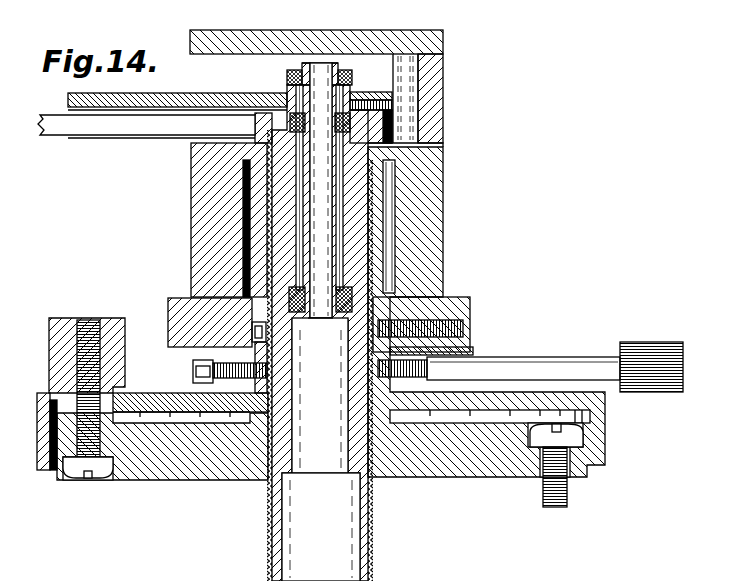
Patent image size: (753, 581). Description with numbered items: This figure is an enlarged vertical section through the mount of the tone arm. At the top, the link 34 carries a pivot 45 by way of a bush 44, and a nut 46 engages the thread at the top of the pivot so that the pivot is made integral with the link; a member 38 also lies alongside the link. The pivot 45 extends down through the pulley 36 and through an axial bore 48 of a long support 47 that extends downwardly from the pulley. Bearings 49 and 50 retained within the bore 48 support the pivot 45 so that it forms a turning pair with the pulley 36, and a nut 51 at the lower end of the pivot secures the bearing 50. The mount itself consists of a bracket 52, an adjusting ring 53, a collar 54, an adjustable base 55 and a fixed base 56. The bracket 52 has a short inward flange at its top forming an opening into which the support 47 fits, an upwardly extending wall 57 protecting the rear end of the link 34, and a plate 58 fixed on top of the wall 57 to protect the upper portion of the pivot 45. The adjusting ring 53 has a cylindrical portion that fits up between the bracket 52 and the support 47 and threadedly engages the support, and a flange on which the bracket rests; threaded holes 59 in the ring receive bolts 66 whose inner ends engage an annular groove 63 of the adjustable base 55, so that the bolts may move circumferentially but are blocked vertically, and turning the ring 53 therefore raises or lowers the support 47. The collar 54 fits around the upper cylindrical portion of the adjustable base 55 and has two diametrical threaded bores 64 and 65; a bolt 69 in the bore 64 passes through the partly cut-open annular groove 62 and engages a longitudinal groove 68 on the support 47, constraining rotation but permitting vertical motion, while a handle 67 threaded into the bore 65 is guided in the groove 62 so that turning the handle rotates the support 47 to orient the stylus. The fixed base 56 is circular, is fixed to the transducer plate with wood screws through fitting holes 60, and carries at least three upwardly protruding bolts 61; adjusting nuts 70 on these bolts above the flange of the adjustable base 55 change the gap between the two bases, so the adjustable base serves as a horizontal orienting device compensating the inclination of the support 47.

The link 34 is at (186, 93).
The pulley 36 is at (420, 146).
The lower plate 38 is at (124, 133).
The bush 44 is at (288, 90).
The pivot 45 is at (323, 320).
The nut 46 is at (352, 78).
The support 47 is at (366, 515).
The axial bore 48 is at (331, 416).
The bearing 49 is at (290, 128).
The bearing 50 is at (291, 296).
The nut 51 is at (297, 318).
The bracket 52 is at (206, 228).
The adjusting ring 53 is at (180, 312).
The collar 54 is at (194, 378).
The adjustable base 55 is at (43, 468).
The fixed base 56 is at (208, 470).
The wall 57 is at (430, 98).
The plate 58 is at (443, 44).
The threaded holes 59 is at (458, 316).
The fitting holes 60 is at (546, 470).
The bolts 61 is at (98, 472).
The annular groove 62 is at (278, 385).
The annular groove 63 is at (253, 332).
The threaded bore 64 is at (223, 380).
The threaded bore 65 is at (421, 382).
The bolts 66 is at (466, 333).
The handle 67 is at (573, 362).
The longitudinal groove 68 is at (270, 496).
The bolt 69 is at (194, 368).
The adjusting nuts 70 is at (62, 318).